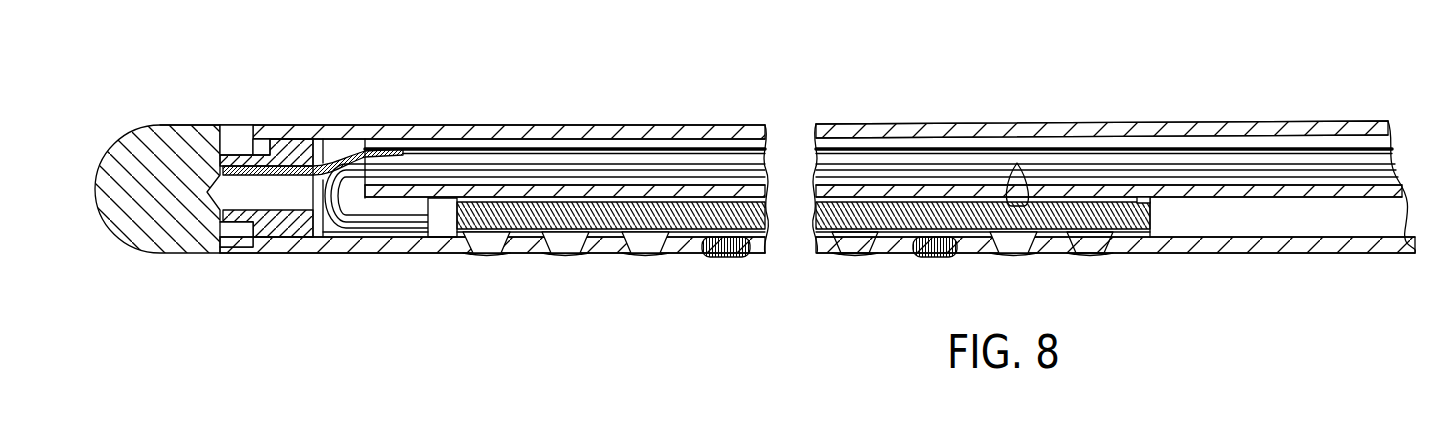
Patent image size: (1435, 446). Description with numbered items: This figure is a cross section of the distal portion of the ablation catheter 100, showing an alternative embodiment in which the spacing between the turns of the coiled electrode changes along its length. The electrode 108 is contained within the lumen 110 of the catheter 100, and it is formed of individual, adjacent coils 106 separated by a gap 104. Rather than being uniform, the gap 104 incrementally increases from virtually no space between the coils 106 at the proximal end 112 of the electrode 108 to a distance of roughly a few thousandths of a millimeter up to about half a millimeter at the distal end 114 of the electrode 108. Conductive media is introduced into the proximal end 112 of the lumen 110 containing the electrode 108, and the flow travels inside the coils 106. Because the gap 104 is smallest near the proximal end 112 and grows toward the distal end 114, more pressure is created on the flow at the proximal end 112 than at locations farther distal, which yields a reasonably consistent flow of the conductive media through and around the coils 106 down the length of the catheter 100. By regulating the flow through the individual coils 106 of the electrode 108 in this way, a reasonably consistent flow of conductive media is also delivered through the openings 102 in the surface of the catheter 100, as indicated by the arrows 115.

The ablation catheter 100 is at (755, 166).
The openings 102 is at (567, 239).
The gap 104 is at (610, 204).
The coils 106 is at (1017, 163).
The electrode 108 is at (1107, 202).
The lumen 110 is at (851, 205).
The proximal end 112 is at (1163, 235).
The distal end 114 is at (468, 202).
The arrows 115 is at (488, 236).